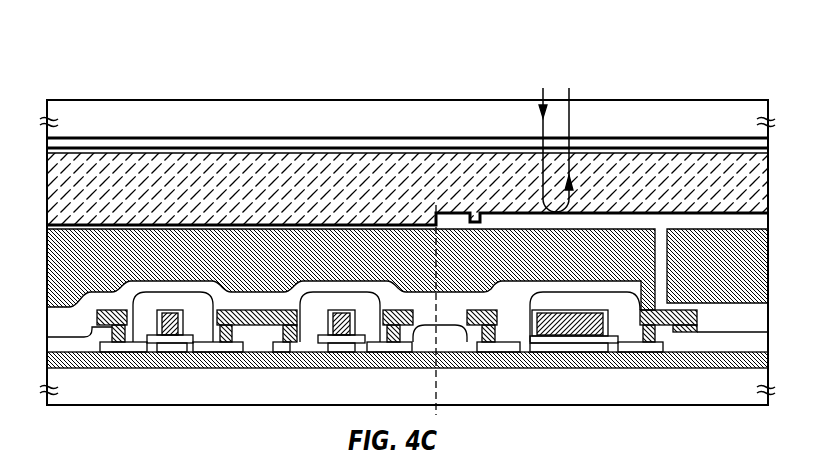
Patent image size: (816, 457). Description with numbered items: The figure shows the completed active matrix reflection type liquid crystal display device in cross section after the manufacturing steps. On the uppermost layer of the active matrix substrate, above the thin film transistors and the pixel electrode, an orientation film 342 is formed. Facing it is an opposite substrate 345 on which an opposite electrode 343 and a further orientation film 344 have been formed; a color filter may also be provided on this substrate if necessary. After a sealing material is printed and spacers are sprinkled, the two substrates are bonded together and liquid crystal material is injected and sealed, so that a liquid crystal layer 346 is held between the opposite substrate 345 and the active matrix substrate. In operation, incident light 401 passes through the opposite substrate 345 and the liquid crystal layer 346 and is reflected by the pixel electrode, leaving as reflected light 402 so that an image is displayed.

The orientation film 342 is at (232, 224).
The opposite electrode 343 is at (310, 140).
The orientation film 344 is at (393, 152).
The opposite substrate 345 is at (152, 110).
The liquid crystal layer 346 is at (470, 172).
The incident light 401 is at (543, 88).
The reflected light 402 is at (570, 110).